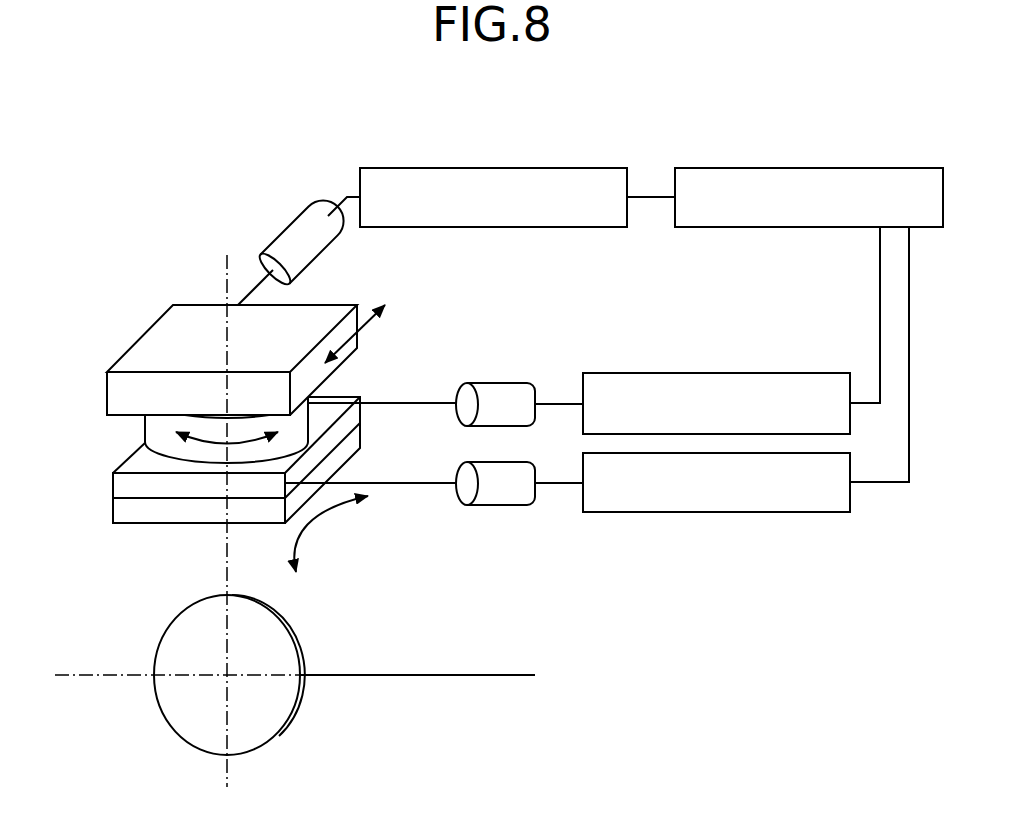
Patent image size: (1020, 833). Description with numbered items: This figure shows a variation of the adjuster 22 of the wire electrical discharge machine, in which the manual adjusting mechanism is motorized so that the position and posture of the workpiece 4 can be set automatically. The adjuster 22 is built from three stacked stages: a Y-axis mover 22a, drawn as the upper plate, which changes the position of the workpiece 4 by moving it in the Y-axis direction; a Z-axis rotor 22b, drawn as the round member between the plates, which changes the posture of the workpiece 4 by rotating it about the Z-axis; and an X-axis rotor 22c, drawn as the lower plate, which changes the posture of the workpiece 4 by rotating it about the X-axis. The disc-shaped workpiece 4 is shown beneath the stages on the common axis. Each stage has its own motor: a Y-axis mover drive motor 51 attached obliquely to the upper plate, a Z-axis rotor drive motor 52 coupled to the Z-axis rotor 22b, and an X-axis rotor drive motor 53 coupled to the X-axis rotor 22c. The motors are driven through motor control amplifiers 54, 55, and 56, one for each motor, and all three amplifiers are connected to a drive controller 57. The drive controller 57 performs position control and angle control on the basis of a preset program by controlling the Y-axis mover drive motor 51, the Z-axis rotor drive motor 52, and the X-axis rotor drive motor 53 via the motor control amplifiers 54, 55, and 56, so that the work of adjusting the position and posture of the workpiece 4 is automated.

The workpiece 4 is at (155, 640).
The adjuster 22 is at (220, 191).
The Y-axis mover 22a is at (357, 342).
The Z-axis rotor 22b is at (293, 420).
The X-axis rotor 22c is at (317, 450).
The Y-axis mover drive motor 51 is at (317, 260).
The Z-axis rotor drive motor 52 is at (493, 383).
The X-axis rotor drive motor 53 is at (498, 505).
The motor control amplifier 54 is at (492, 168).
The motor control amplifier 55 is at (715, 373).
The motor control amplifier 56 is at (720, 513).
The drive controller 57 is at (807, 168).